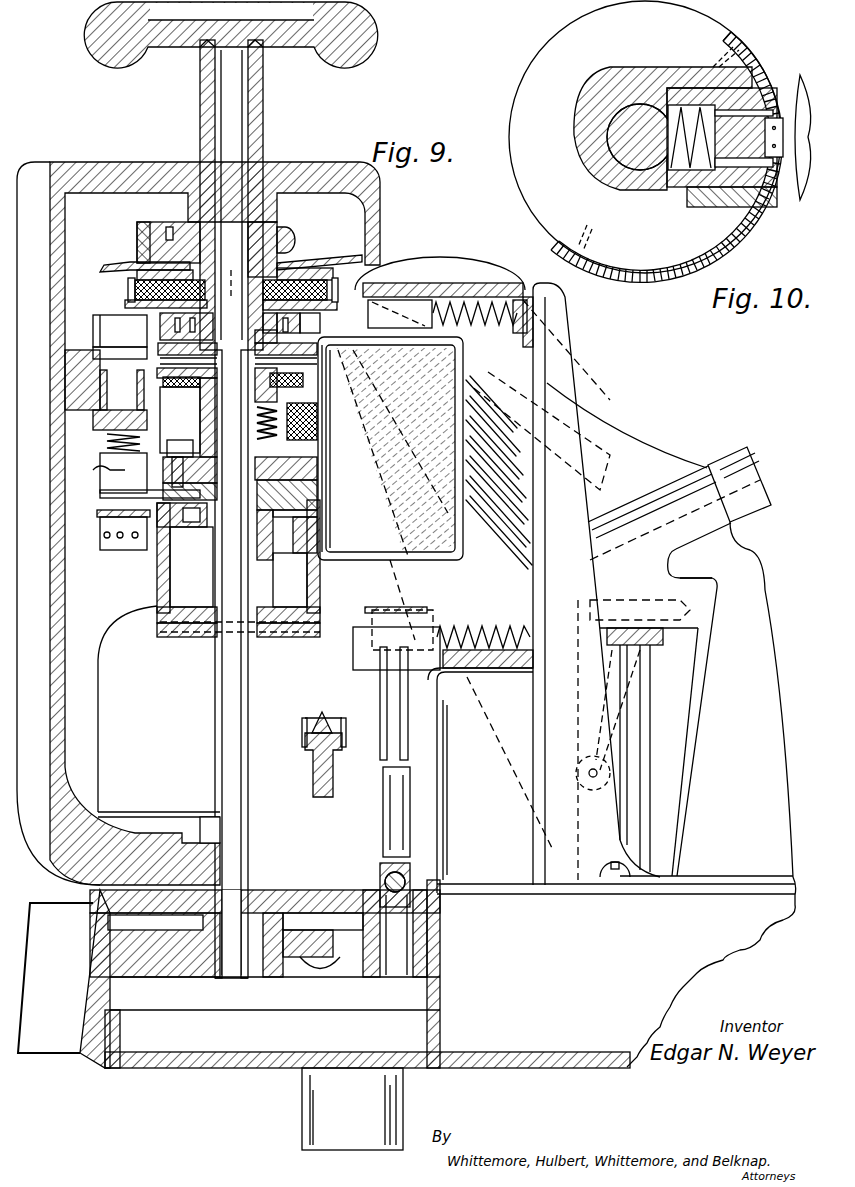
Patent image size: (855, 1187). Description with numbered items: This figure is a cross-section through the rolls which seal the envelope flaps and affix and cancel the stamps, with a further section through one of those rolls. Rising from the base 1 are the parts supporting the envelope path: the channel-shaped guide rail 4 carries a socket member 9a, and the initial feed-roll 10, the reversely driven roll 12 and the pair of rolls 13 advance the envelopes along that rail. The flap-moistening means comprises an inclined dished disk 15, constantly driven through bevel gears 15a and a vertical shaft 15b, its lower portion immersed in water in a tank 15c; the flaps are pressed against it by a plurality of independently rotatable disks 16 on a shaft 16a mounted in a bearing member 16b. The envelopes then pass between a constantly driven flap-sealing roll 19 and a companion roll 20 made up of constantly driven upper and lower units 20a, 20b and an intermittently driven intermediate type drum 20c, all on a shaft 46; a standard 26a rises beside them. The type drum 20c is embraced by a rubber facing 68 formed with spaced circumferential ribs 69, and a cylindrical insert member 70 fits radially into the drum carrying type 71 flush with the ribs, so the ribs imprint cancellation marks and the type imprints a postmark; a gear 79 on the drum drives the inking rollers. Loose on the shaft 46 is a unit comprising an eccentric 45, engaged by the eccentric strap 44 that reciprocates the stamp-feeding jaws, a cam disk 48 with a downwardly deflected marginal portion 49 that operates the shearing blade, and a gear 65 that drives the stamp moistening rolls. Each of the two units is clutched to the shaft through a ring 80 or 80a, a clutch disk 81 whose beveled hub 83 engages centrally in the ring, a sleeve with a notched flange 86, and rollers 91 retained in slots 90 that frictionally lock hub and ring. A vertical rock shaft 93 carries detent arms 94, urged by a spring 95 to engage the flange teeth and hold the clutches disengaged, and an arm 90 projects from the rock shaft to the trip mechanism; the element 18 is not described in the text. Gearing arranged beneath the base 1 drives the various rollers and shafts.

In FIG. 9, the base 1 is at (61, 1020).
In FIG. 9, the channel-shaped guide rail 4 is at (342, 720).
In FIG. 9, the socket member 9a is at (300, 780).
In FIG. 9, the initial feed-roll 10 is at (252, 428).
In FIG. 9, the reversely driven roll 12 is at (250, 352).
In FIG. 9, the pair of rolls 13 is at (305, 962).
In FIG. 9, the inclined dished disk 15 is at (383, 500).
In FIG. 9, the bevel gears 15a is at (594, 515).
In FIG. 9, the vertical shaft 15b is at (650, 697).
In FIG. 9, the tank 15c is at (450, 720).
In FIG. 9, the disks 16 is at (478, 407).
In FIG. 9, the shaft 16a is at (530, 488).
In FIG. 9, the bearing member 16b is at (623, 447).
In FIG. 9, the collar 18 is at (316, 328).
In FIG. 9, the flap-sealing roll 19 is at (340, 568).
In FIG. 10, the flap-sealing roll 19 is at (795, 75).
In FIG. 10, the flap-sealing roll 20 is at (511, 90).
In FIG. 9, the upper unit 20a is at (390, 488).
In FIG. 9, the lower unit 20b is at (157, 570).
In FIG. 9, the intermittently driven unit (type drum) 20c is at (205, 420).
In FIG. 10, the intermittently driven unit (type drum) 20c is at (585, 110).
In FIG. 9, the standard 26a is at (275, 685).
In FIG. 9, the eccentric strap 44 is at (137, 237).
In FIG. 9, the eccentric 45 is at (290, 242).
In FIG. 9, the shaft 46 is at (237, 136).
In FIG. 10, the shaft 46 is at (592, 152).
In FIG. 9, the cam disk 48 is at (130, 262).
In FIG. 9, the downwardly deflected marginal portion 49 is at (128, 272).
In FIG. 9, the gear 65 is at (330, 286).
In FIG. 9, the rubber facing 68 is at (318, 492).
In FIG. 10, the rubber facing 68 is at (640, 284).
In FIG. 10, the circumferential ribs 69 is at (700, 287).
In FIG. 9, the cylindrical insert member 70 is at (262, 458).
In FIG. 10, the cylindrical insert member 70 is at (732, 188).
In FIG. 9, the type 71 is at (318, 470).
In FIG. 10, the type 71 is at (789, 188).
In FIG. 9, the gear 79 is at (180, 437).
In FIG. 9, the clutch ring 80 is at (148, 330).
In FIG. 9, the clutch ring 80a is at (195, 533).
In FIG. 9, the clutch disk 81 is at (320, 310).
In FIG. 9, the hub 83 is at (212, 327).
In FIG. 9, the flange 86 is at (315, 262).
In FIG. 9, the slots / arm 90 is at (97, 514).
In FIG. 9, the roller 91 is at (300, 323).
In FIG. 9, the vertical rock shaft 93 is at (100, 497).
In FIG. 9, the detent arms 94 is at (125, 306).
In FIG. 9, the spring 95 is at (107, 440).